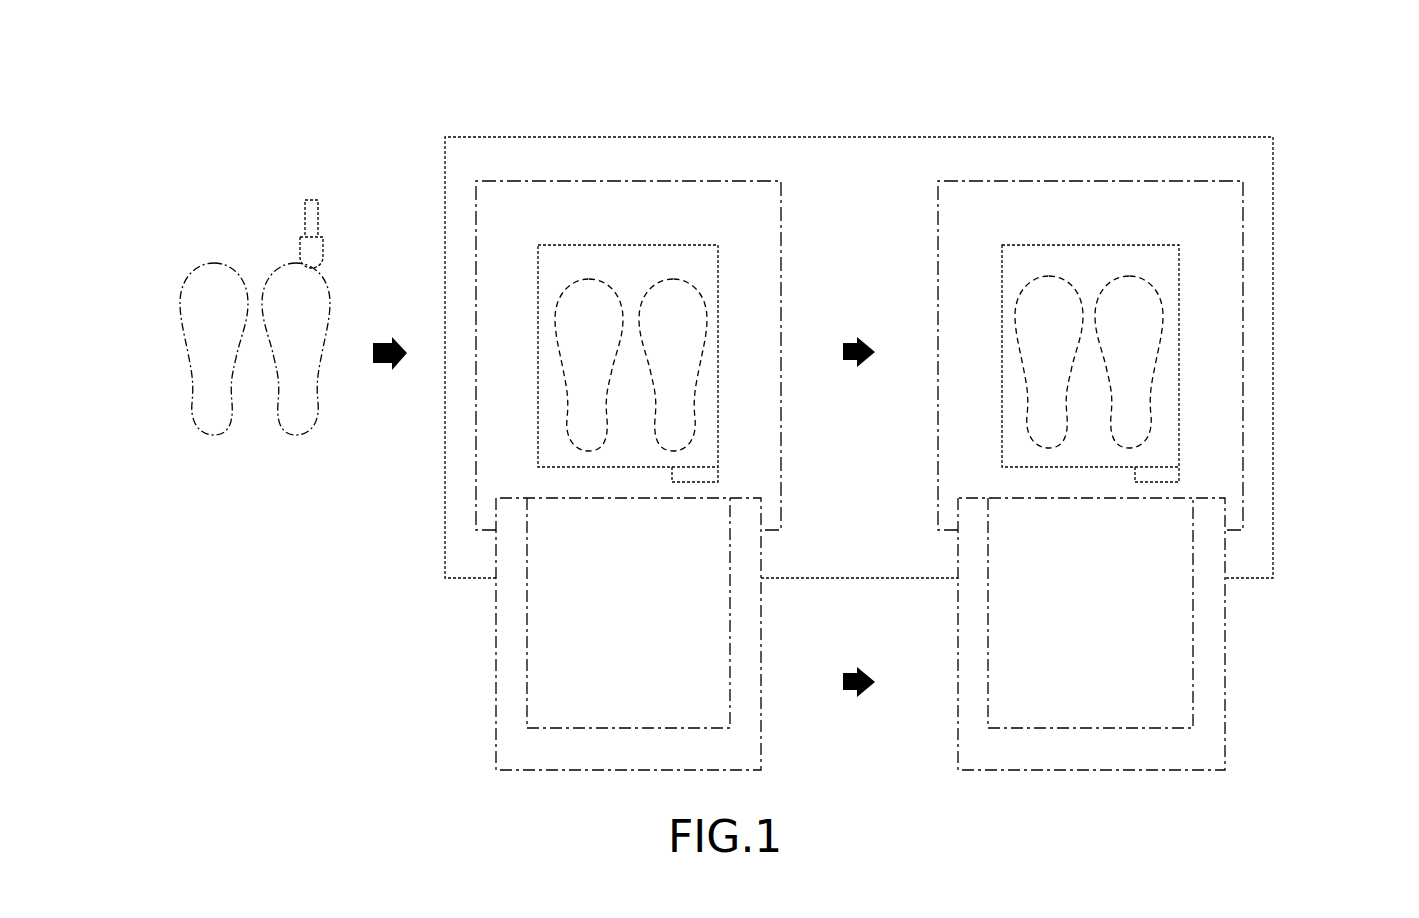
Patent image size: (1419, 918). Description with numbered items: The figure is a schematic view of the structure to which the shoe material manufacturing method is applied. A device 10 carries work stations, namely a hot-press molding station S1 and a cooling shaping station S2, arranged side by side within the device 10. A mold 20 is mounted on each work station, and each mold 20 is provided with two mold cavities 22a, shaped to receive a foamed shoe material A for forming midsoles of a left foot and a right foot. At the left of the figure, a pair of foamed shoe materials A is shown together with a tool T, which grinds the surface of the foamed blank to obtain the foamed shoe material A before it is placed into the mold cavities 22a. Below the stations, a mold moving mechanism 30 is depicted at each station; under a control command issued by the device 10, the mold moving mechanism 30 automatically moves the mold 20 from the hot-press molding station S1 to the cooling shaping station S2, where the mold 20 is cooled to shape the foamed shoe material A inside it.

The device 10 is at (1273, 310).
The mold 20 is at (552, 245).
The mold cavity 22a is at (600, 279).
The mold moving mechanism 30 is at (495, 705).
The hot-press molding station S1 is at (760, 181).
The cooling shaping station S2 is at (1193, 181).
The tool T is at (303, 213).
The foamed shoe material A is at (200, 434).